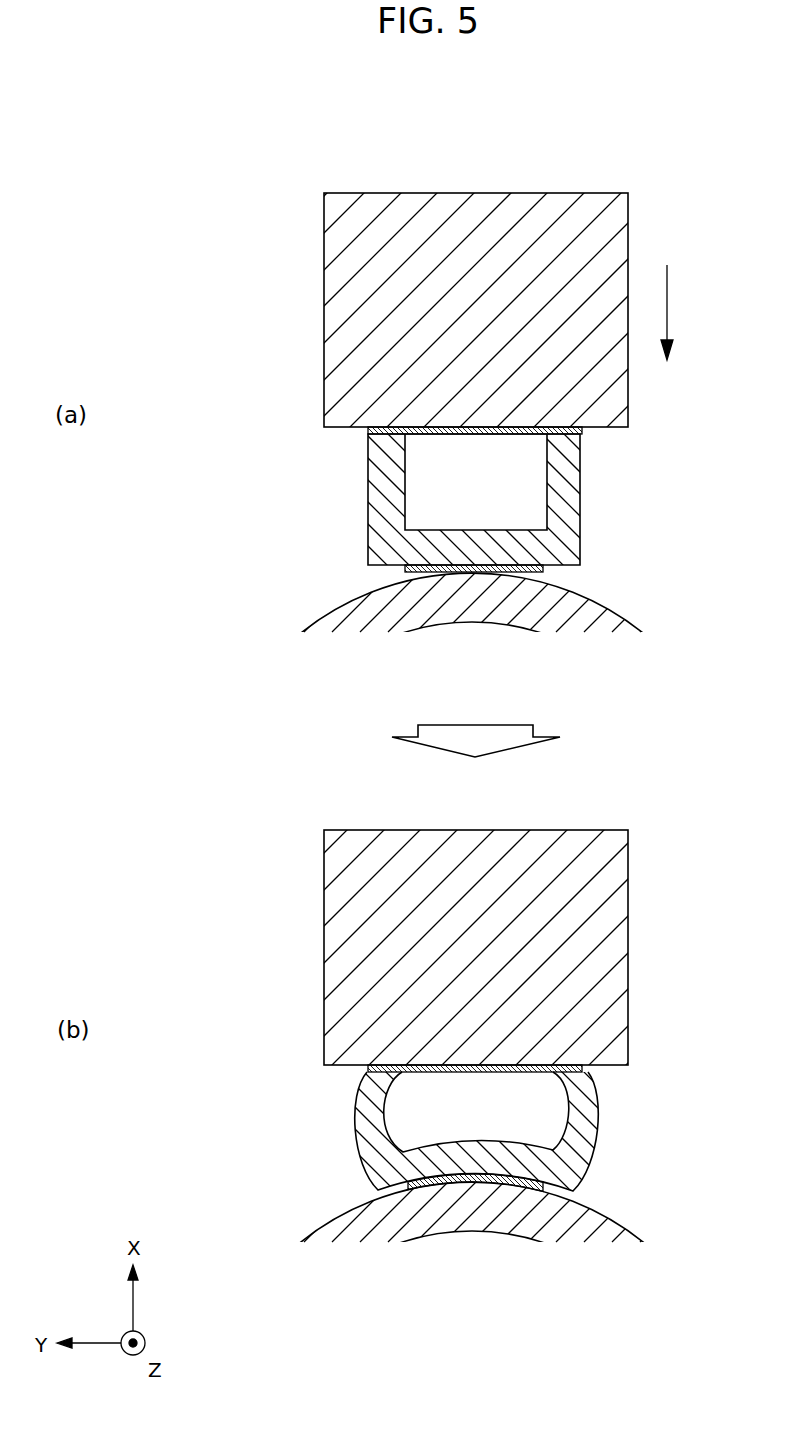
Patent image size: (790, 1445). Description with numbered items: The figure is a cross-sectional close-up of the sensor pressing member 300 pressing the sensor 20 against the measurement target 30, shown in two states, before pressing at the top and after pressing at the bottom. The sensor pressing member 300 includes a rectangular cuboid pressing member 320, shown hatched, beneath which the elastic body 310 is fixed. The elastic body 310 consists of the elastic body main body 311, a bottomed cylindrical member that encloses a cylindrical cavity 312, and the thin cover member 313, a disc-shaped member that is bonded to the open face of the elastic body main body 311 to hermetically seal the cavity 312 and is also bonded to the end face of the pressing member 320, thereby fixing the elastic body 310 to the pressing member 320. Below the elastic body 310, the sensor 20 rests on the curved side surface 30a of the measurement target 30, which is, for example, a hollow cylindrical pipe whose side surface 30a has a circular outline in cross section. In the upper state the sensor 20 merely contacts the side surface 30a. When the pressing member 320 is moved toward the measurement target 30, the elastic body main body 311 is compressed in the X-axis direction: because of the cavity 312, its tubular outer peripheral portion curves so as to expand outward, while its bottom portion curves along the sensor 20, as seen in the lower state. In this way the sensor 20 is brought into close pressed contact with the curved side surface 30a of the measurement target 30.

The sensor pressing member 300 is at (278, 277).
The pressing member 320 is at (323, 307).
The elastic body 310 is at (474, 813).
The elastic body main body 311 is at (583, 492).
The cavity 312 is at (405, 507).
The cover member 313 is at (584, 437).
The sensor 20 is at (410, 570).
The measurement target 30 is at (472, 1003).
The side surface 30a is at (602, 1217).